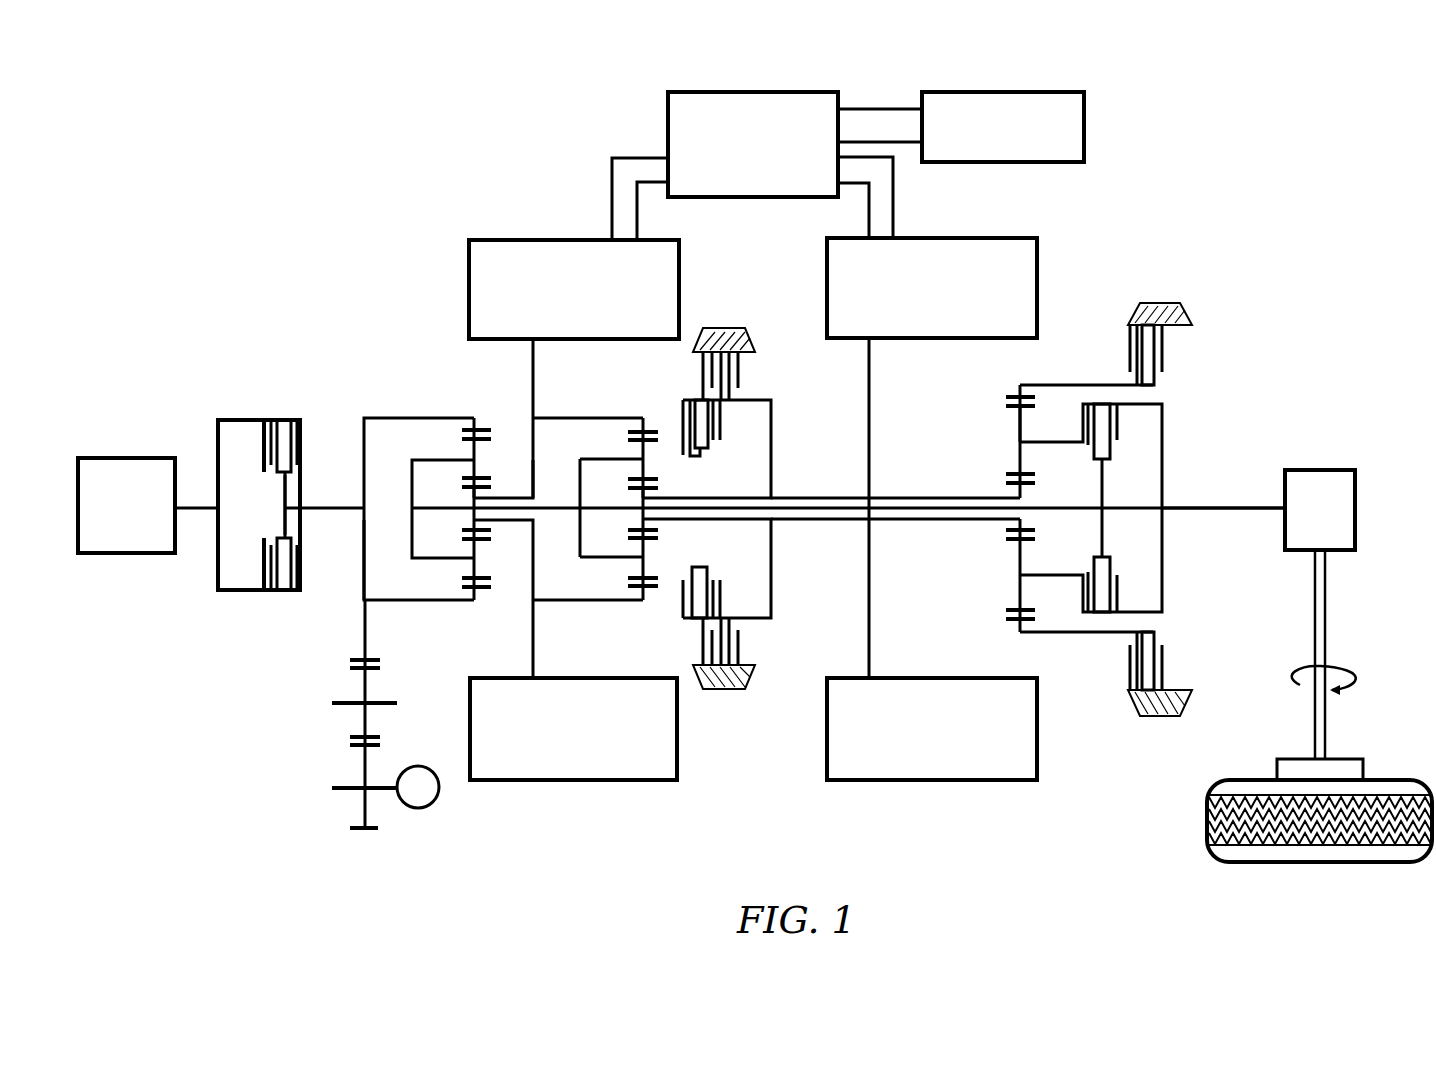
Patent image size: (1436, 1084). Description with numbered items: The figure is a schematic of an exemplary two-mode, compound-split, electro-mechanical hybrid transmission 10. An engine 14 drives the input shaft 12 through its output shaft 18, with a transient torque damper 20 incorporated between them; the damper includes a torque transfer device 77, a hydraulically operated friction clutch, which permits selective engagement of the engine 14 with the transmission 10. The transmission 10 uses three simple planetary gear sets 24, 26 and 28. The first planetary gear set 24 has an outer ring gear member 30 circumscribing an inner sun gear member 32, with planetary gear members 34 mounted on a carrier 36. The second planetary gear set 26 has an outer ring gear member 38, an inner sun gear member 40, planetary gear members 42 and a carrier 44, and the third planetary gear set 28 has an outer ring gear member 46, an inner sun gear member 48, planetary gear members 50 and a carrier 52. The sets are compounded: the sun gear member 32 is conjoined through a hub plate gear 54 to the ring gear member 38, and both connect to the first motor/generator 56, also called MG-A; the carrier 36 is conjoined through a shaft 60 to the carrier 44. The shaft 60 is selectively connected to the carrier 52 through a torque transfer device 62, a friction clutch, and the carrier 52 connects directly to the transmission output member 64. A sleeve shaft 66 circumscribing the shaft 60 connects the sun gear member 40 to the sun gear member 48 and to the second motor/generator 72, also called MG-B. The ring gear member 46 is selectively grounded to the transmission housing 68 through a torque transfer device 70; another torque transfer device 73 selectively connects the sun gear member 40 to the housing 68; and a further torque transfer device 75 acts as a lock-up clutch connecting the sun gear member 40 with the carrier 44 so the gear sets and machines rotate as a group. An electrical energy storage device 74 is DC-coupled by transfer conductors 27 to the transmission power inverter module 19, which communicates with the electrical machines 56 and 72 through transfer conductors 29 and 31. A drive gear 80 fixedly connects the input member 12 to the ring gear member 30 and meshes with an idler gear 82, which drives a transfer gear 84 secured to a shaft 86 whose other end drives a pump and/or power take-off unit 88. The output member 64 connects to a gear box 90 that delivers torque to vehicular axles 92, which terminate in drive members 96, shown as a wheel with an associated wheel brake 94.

The transmission 10 is at (425, 193).
The input shaft 12 is at (350, 496).
The engine 14 is at (133, 456).
The output shaft 18 is at (202, 496).
The transmission power inverter module 19 is at (666, 108).
The transient torque damper 20 is at (283, 405).
The first planetary gear set 24 is at (464, 405).
The second planetary gear set 26 is at (637, 405).
The transfer conductors 27 is at (880, 107).
The third planetary gear set 28 is at (1010, 382).
The transfer conductors 29 is at (610, 198).
The outer ring gear member 30 is at (483, 428).
The transfer conductors 31 is at (895, 192).
The inner sun gear member 32 is at (480, 496).
The planetary gear members 34 is at (470, 450).
The carrier 36 is at (410, 524).
The outer ring gear member 38 is at (650, 430).
The inner sun gear member 40 is at (650, 495).
The planetary gear members 42 is at (640, 452).
The carrier 44 is at (572, 542).
The outer ring gear member 46 is at (1005, 392).
The inner sun gear member 48 is at (1010, 490).
The planetary gear members 50 is at (1012, 414).
The carrier 52 is at (1165, 412).
The hub plate gear 54 is at (534, 490).
The motor/generator 56 is at (467, 270).
The shaft 60 is at (838, 507).
The torque transfer device 62 is at (1130, 442).
The transmission output member 64 is at (1258, 504).
The sleeve shaft 66 is at (810, 496).
The transmission housing 68 is at (720, 328).
The torque transfer device 70 is at (1113, 348).
The motor/generator 72 is at (1039, 255).
The torque transfer device 73 is at (750, 380).
The electrical storage device 74 is at (1086, 112).
The torque transfer device 75 is at (727, 434).
The torque transfer device 77 is at (268, 455).
The drive gear 80 is at (362, 556).
The idler gear 82 is at (362, 693).
The transfer gear 84 is at (362, 810).
The shaft 86 is at (383, 792).
The hydraulic/transmission fluid pump and/or power take-off unit 88 is at (430, 805).
The gear box 90 is at (1282, 537).
The vehicular axles 92 is at (1328, 632).
The wheel brake 94 is at (1362, 770).
The drive members 96 is at (1232, 854).